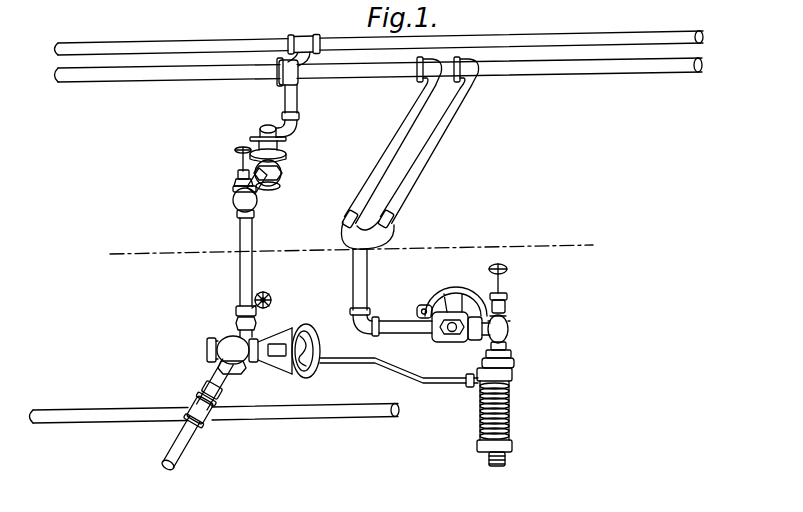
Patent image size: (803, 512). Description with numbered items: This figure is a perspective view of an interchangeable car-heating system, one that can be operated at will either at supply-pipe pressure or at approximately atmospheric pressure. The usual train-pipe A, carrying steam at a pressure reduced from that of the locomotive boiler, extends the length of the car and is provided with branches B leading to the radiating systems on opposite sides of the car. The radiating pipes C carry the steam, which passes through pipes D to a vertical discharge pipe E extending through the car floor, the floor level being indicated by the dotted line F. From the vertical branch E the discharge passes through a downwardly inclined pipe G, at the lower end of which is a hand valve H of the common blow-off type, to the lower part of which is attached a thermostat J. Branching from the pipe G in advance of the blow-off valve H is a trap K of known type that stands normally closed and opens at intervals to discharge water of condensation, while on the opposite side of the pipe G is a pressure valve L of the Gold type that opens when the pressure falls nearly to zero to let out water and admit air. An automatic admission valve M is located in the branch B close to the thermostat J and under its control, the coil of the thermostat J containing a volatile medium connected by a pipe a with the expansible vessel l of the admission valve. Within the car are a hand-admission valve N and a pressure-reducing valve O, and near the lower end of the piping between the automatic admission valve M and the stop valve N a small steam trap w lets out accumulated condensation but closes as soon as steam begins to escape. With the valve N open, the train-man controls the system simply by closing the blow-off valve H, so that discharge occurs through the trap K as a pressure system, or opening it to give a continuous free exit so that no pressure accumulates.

The radiating pipes C is at (183, 51).
The pressure-reducing valve O is at (262, 129).
The hand-admission valve N is at (233, 201).
The branch pipes D is at (392, 147).
The dotted line F is at (420, 252).
The vertical discharge pipe E is at (371, 287).
The trap K is at (448, 289).
The pressure valve L is at (450, 338).
The downwardly inclined pipe G is at (378, 334).
The hand valve H is at (505, 323).
The thermostat J is at (512, 404).
The small steam trap w is at (268, 306).
The automatic admission valve M is at (238, 345).
The expansible vessel l is at (308, 333).
The branches B is at (214, 366).
The train-pipe A is at (268, 416).
The pipe a is at (386, 366).